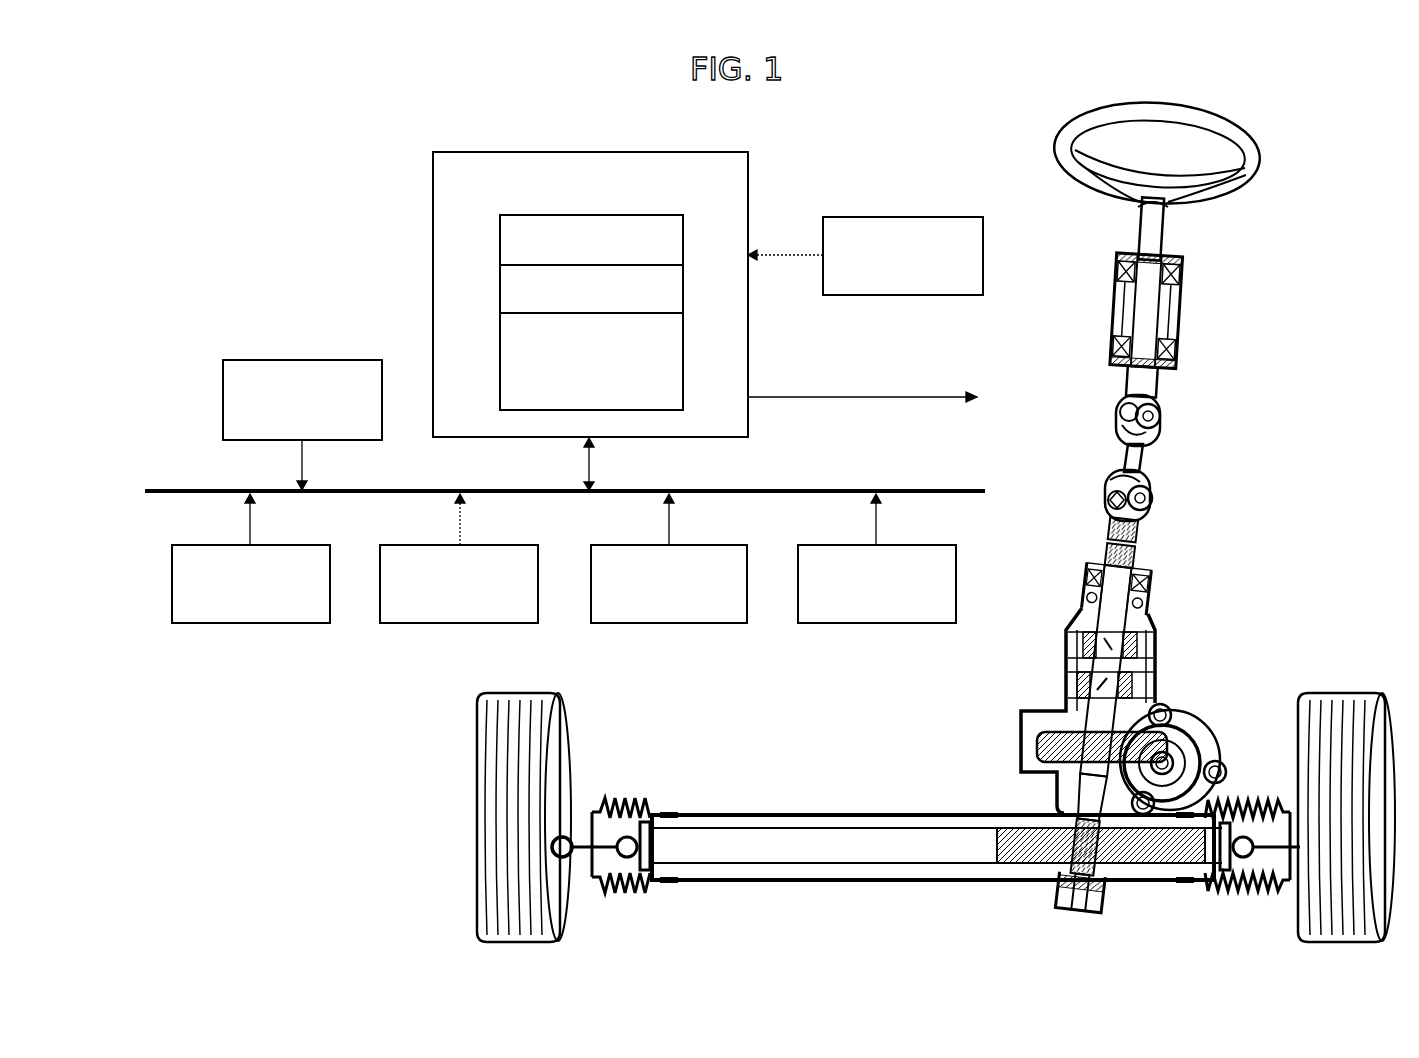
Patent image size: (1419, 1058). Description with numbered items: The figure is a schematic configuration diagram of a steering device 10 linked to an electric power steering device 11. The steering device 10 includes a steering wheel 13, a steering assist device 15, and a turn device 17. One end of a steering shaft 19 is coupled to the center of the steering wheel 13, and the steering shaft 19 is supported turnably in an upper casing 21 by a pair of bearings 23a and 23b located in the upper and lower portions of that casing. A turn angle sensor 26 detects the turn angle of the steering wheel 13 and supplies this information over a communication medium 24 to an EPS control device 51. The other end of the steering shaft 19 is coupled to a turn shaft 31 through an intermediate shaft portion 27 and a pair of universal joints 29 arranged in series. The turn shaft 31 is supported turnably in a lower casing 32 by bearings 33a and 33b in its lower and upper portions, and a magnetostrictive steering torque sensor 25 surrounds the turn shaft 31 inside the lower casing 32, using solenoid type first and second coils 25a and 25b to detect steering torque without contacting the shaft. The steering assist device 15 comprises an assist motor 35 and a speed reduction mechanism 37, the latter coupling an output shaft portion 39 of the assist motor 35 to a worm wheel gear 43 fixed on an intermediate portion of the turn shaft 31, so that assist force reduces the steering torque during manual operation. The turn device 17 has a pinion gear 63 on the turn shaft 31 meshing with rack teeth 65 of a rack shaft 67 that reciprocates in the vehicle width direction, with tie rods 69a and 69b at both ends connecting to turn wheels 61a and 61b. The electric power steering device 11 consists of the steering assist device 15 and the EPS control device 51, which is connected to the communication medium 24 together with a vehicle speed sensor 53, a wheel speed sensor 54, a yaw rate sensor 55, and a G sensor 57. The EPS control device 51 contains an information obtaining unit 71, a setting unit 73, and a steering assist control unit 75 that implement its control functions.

The steering device 10 is at (1245, 100).
The electric power steering device 11 is at (832, 97).
The steering wheel 13 is at (1255, 168).
The steering assist device 15 is at (1276, 594).
The turn device 17 is at (1028, 910).
The steering shaft 19 is at (1165, 230).
The upper casing 21 is at (1188, 321).
The bearing 23a is at (1175, 348).
The bearing 23b is at (1182, 280).
The communication medium 24 is at (700, 488).
The steering torque sensor 25 is at (928, 215).
The first coil 25a is at (1145, 650).
The second coil 25b is at (1140, 686).
The turn angle sensor 26 is at (922, 545).
The intermediate shaft portion 27 is at (1128, 458).
The universal joints 29 is at (1150, 504).
The turn shaft 31 is at (1100, 718).
The lower casing 32 is at (1129, 588).
The bearing 33a is at (1103, 893).
The bearing 33b is at (1155, 606).
The assist motor 35 is at (1207, 756).
The speed reduction mechanism 37 is at (992, 754).
The output shaft portion 39 is at (1165, 760).
The worm wheel gear 43 is at (1030, 745).
The EPS control device 51 is at (705, 297).
The vehicle speed sensor 53 is at (713, 545).
The wheel speed sensor 54 is at (502, 545).
The yaw rate sensor 55 is at (282, 545).
The G sensor 57 is at (333, 360).
The turn wheel 61a is at (1340, 700).
The turn wheel 61b is at (560, 712).
The pinion gear 63 is at (1047, 880).
The rack teeth 65 is at (1008, 858).
The rack shaft 67 is at (936, 875).
The tie rod 69a is at (1265, 855).
The tie rod 69b is at (605, 858).
The information obtaining unit 71 is at (683, 230).
The setting unit 73 is at (683, 282).
The steering assist control unit 75 is at (683, 354).